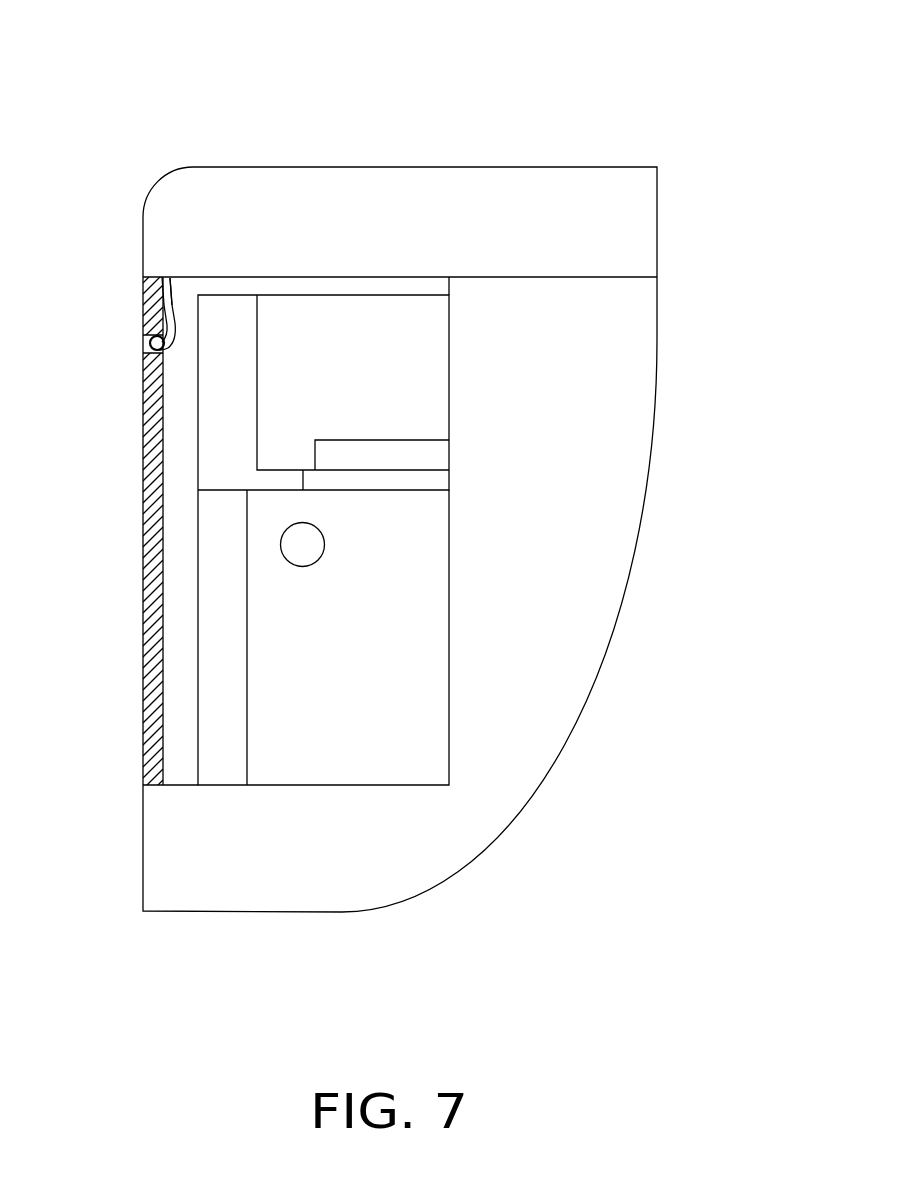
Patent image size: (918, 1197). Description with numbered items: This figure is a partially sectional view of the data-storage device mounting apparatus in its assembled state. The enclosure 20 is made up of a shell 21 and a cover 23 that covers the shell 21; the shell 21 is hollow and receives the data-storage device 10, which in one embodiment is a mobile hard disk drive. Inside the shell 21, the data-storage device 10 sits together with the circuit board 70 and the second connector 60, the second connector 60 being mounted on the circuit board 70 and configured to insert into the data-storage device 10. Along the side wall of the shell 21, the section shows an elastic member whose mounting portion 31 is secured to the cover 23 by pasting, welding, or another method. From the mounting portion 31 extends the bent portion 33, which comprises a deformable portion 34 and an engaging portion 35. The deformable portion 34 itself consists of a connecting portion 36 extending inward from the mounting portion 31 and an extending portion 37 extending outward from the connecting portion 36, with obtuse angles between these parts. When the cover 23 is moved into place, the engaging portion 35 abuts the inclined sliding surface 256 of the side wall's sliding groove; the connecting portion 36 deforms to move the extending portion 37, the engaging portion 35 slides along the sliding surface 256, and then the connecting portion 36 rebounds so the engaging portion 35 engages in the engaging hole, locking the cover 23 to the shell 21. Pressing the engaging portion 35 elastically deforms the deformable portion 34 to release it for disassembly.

The data-storage device 10 is at (410, 545).
The enclosure 20 is at (740, 217).
The shell 21 is at (627, 338).
The cover 23 is at (632, 238).
The mounting portion 31 is at (168, 290).
The bent portion 33 is at (259, 183).
The deformable portion 34 is at (238, 208).
The engaging portion 35 is at (170, 350).
The connecting portion 36 is at (168, 302).
The extending portion 37 is at (172, 325).
The second connector 60 is at (423, 453).
The circuit board 70 is at (413, 388).
The sliding surface 256 is at (162, 277).